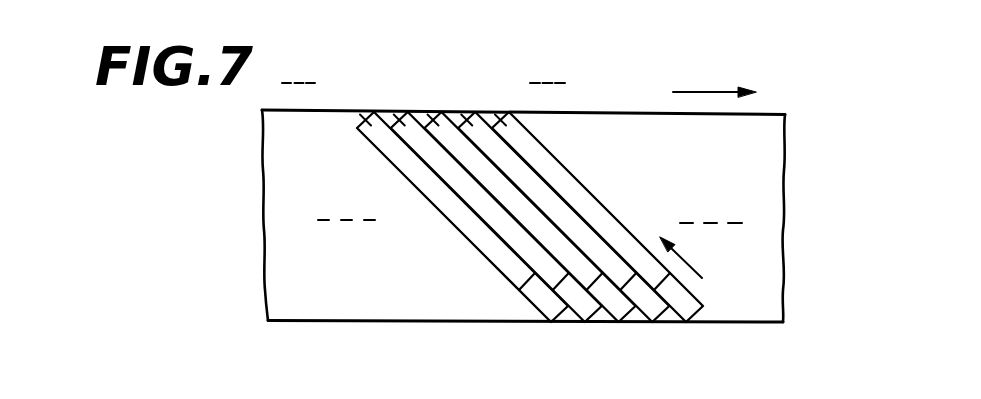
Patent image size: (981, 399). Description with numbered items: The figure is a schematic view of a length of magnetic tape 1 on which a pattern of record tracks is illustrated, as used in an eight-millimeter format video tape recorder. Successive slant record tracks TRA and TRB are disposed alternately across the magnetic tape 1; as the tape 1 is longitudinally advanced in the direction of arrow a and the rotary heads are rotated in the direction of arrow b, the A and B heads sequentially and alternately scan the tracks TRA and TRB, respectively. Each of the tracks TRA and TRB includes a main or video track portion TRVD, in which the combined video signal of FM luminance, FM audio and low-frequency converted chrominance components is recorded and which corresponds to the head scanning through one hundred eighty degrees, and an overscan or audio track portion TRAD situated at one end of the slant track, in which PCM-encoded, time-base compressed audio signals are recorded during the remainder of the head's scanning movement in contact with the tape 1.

The magnetic tape 1 is at (311, 300).
The slant record track TRA is at (361, 114).
The slant record track TRB is at (397, 110).
The video track portion TRVD is at (568, 180).
The audio track portion TRAD is at (692, 308).
The tape advancing direction arrow a is at (691, 89).
The head rotating direction arrow b is at (687, 262).